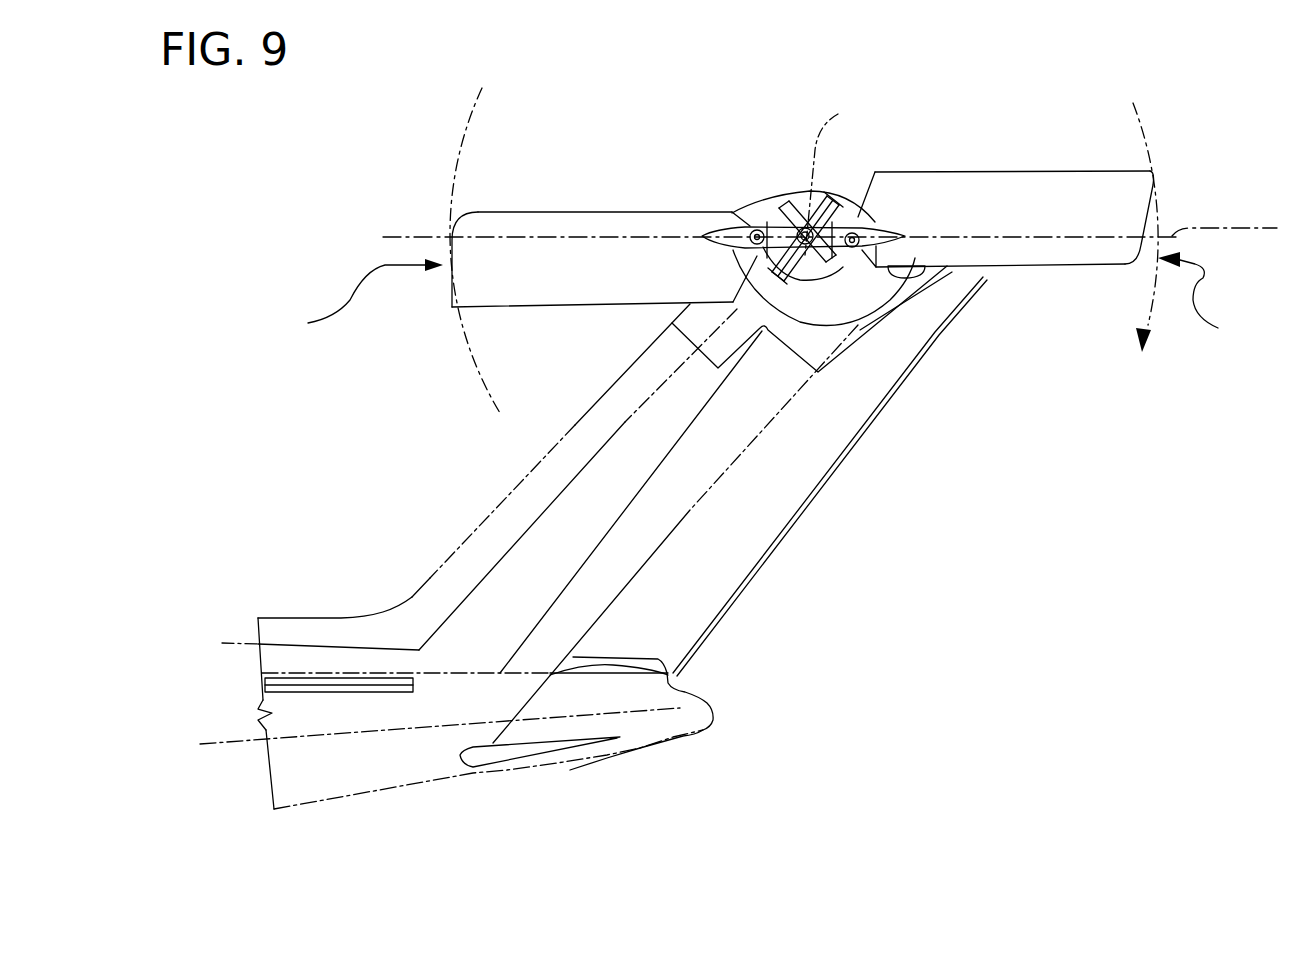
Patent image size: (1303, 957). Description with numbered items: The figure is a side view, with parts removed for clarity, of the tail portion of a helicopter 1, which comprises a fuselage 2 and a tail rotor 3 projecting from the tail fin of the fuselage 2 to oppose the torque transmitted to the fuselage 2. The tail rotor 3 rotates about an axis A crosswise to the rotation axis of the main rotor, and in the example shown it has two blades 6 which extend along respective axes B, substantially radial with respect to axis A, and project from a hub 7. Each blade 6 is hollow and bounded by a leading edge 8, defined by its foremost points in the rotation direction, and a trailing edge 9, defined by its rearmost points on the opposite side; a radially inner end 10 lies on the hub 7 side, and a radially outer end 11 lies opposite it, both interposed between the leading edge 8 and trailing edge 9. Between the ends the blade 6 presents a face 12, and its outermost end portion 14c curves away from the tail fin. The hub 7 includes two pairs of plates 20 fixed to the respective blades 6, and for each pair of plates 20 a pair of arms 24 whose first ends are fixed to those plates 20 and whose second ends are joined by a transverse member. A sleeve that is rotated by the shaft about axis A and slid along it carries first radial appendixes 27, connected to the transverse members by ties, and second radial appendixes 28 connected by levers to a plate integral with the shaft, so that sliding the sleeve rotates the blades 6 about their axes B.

The helicopter 1 is at (300, 540).
The fuselage 2 is at (316, 765).
The tail rotor 3 is at (932, 105).
The blade 6 is at (498, 165).
The hub 7 is at (785, 185).
The leading edge 8 is at (550, 182).
The trailing edge 9 is at (540, 316).
The radially inner end 10 is at (873, 172).
The radially outer end 11 is at (764, 301).
The face 12 is at (605, 283).
The end portion 14c is at (473, 294).
The plates 20 is at (736, 222).
The arms 24 is at (850, 214).
The first radial appendixes 27 is at (841, 242).
The second radial appendixes 28 is at (790, 215).
The axis A is at (829, 170).
The axis B is at (390, 236).